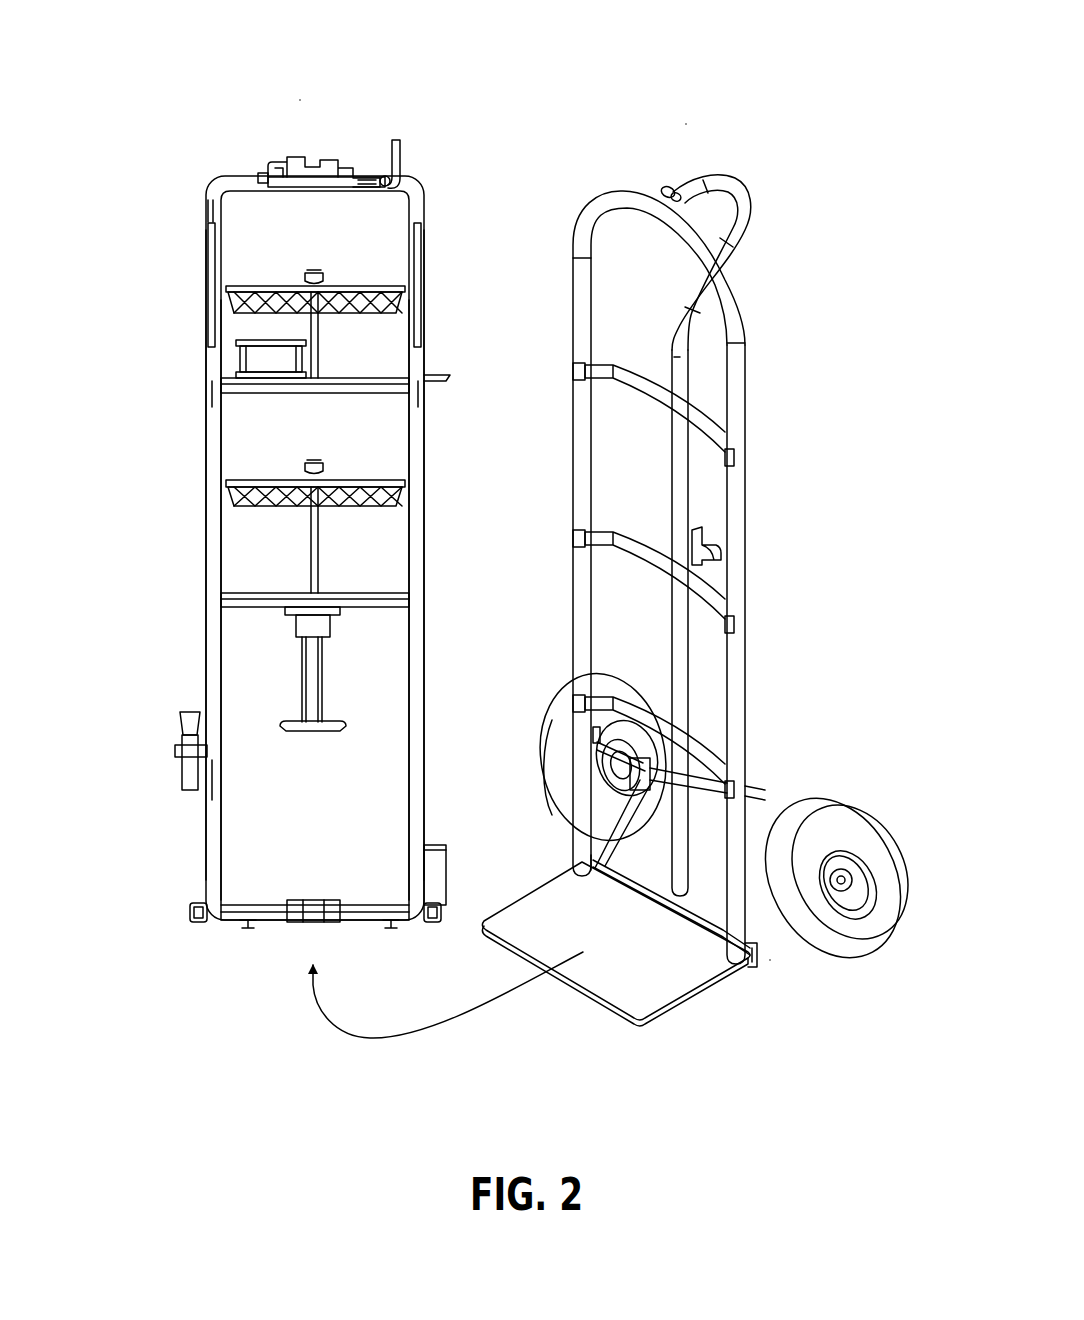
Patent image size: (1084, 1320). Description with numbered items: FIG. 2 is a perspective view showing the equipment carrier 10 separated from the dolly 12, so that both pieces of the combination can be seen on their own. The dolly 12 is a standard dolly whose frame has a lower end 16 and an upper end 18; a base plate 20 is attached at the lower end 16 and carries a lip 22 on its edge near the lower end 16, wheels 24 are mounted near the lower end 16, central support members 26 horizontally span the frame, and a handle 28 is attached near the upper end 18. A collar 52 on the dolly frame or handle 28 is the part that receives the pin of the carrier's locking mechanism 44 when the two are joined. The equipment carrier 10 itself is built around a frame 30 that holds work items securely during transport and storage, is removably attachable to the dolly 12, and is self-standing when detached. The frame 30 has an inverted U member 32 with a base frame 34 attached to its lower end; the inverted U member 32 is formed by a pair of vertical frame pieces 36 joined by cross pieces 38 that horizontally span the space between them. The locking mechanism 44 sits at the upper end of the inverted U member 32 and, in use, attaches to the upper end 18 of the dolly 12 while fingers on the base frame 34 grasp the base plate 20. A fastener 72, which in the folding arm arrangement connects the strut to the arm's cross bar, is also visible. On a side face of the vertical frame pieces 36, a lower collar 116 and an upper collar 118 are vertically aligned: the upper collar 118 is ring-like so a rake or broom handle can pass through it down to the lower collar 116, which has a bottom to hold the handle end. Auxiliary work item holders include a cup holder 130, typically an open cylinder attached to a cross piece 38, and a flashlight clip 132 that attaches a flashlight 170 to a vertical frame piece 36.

The equipment carrier 10 is at (298, 97).
The dolly 12 is at (686, 122).
The lower end 16 is at (772, 965).
The upper end 18 is at (776, 256).
The base plate 20 is at (622, 996).
The lip 22 is at (706, 922).
The wheels 24 is at (856, 803).
The central support members 26 is at (703, 418).
The handle 28 is at (727, 190).
The frame 30 is at (200, 520).
The inverted U member 32 is at (412, 561).
The base frame 34 is at (232, 913).
The vertical frame pieces 36 is at (210, 272).
The cross pieces 38 is at (245, 182).
The locking mechanism 44 is at (320, 146).
The collar 52 is at (667, 187).
The fastener 72 is at (318, 282).
The lower collar 116 is at (436, 868).
The upper collar 118 is at (432, 378).
The cup holder 130 is at (290, 340).
The flashlight clip 132 is at (190, 748).
The flashlight 170 is at (190, 770).